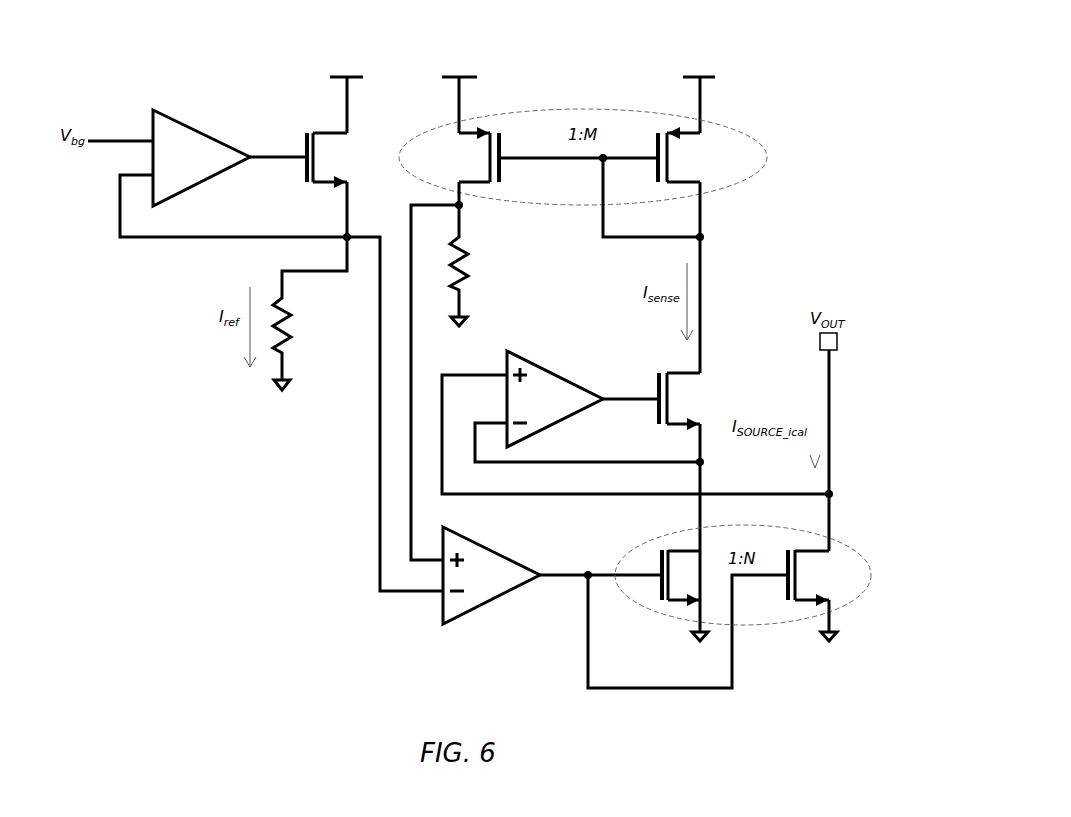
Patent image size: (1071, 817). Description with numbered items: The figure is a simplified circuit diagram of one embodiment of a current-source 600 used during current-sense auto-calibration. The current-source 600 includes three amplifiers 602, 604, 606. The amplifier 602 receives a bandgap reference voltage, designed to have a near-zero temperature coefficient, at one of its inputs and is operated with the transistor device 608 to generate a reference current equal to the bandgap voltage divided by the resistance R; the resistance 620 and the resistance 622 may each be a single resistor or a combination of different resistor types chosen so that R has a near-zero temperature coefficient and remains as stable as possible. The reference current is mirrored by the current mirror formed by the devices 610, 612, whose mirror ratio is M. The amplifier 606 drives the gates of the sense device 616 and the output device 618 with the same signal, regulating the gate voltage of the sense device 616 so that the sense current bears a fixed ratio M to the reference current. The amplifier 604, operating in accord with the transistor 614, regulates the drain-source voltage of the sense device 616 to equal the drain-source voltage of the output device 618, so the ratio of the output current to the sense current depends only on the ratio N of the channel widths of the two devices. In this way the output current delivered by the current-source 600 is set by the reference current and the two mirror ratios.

The current-source 600 is at (745, 46).
The amplifier 602 is at (200, 130).
The amplifier 604 is at (563, 372).
The amplifier 606 is at (517, 560).
The transistor device 608 is at (305, 155).
The current mirror device 610 is at (500, 163).
The current mirror device 612 is at (670, 158).
The transistor 614 is at (664, 399).
The sense device 616 is at (660, 574).
The output device 618 is at (800, 578).
The resistance 620 is at (290, 317).
The resistance 622 is at (470, 258).